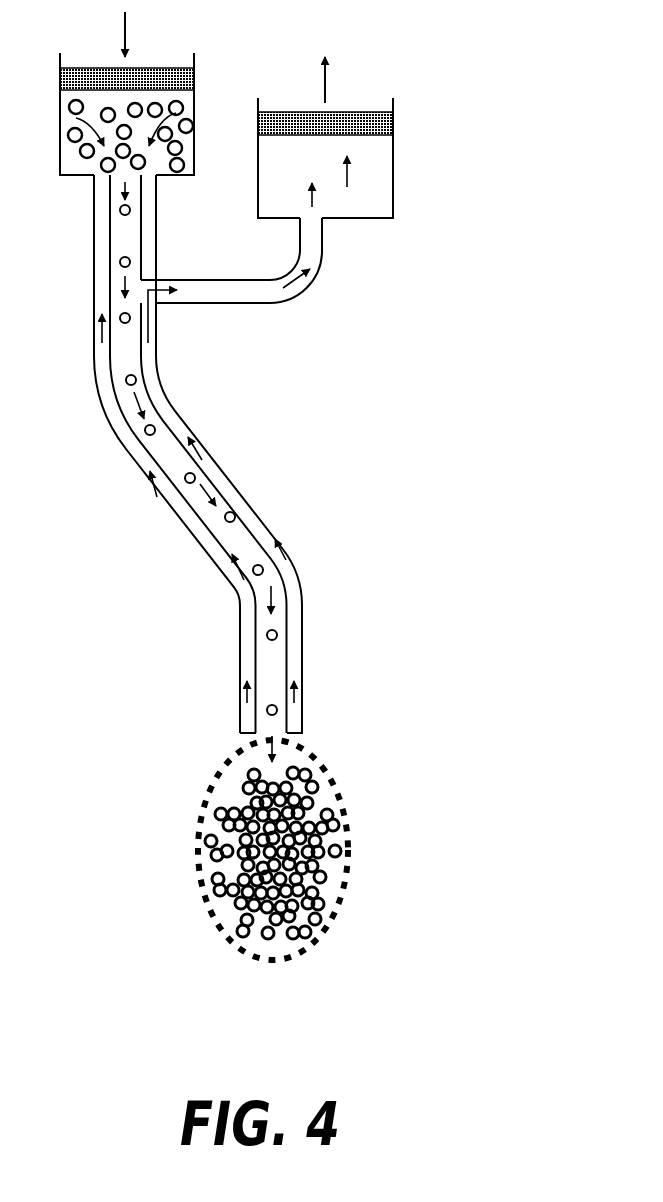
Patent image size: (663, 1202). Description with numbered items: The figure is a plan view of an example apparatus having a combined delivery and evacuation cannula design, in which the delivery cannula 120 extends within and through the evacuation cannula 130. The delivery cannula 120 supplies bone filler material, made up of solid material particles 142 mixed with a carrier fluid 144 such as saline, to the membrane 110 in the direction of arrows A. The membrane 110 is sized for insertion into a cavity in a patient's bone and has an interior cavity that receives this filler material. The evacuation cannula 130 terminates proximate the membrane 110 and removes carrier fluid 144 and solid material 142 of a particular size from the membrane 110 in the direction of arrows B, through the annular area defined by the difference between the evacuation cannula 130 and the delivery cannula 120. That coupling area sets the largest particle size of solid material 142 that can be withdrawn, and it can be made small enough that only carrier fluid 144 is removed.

The membrane 110 is at (343, 818).
The delivery cannula 120 is at (290, 618).
The evacuation cannula 130 is at (303, 657).
The solid material particles 142 is at (187, 486).
The carrier fluid 144 is at (388, 195).
The arrows A is at (130, 408).
The arrows B is at (283, 553).